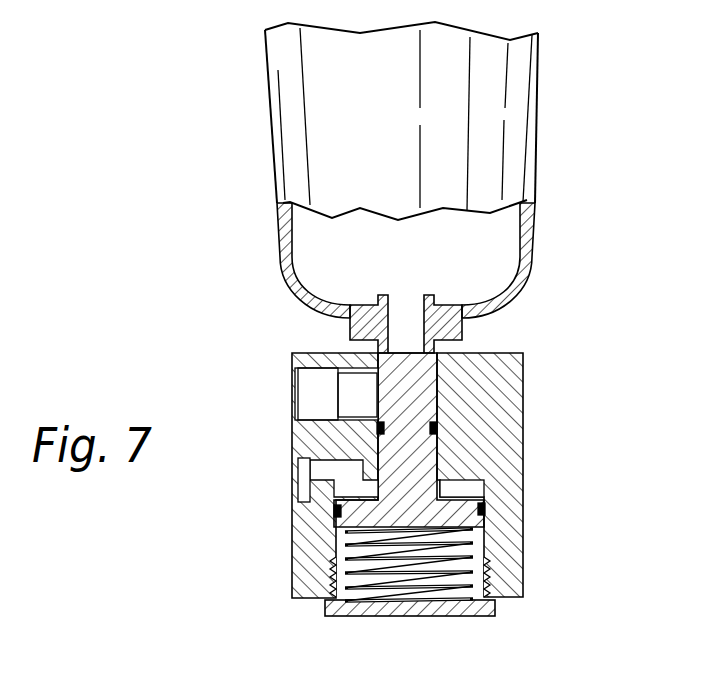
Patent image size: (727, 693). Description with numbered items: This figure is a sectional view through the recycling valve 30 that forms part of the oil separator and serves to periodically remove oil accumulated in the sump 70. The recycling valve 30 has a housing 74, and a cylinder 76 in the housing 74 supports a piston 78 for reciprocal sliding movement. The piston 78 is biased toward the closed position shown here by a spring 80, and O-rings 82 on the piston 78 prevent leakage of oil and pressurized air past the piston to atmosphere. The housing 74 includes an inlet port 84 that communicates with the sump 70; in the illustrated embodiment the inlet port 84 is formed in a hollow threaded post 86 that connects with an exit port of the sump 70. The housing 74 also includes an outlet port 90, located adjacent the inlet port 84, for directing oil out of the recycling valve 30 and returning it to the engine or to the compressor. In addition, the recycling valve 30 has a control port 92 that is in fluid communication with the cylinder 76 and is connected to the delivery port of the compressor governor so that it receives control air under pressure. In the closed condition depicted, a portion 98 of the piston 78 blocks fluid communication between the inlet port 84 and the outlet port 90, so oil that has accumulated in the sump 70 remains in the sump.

The recycling valve 30 is at (434, 480).
The sump 70 is at (522, 285).
The housing 74 is at (523, 563).
The cylinder 76 is at (470, 489).
The piston 78 is at (392, 447).
The spring 80 is at (428, 586).
The O-rings 82 is at (440, 428).
The inlet port 84 is at (392, 314).
The hollow threaded post 86 is at (430, 325).
The outlet port 90 is at (398, 386).
The control port 92 is at (313, 479).
The portion of the piston 98 is at (305, 395).